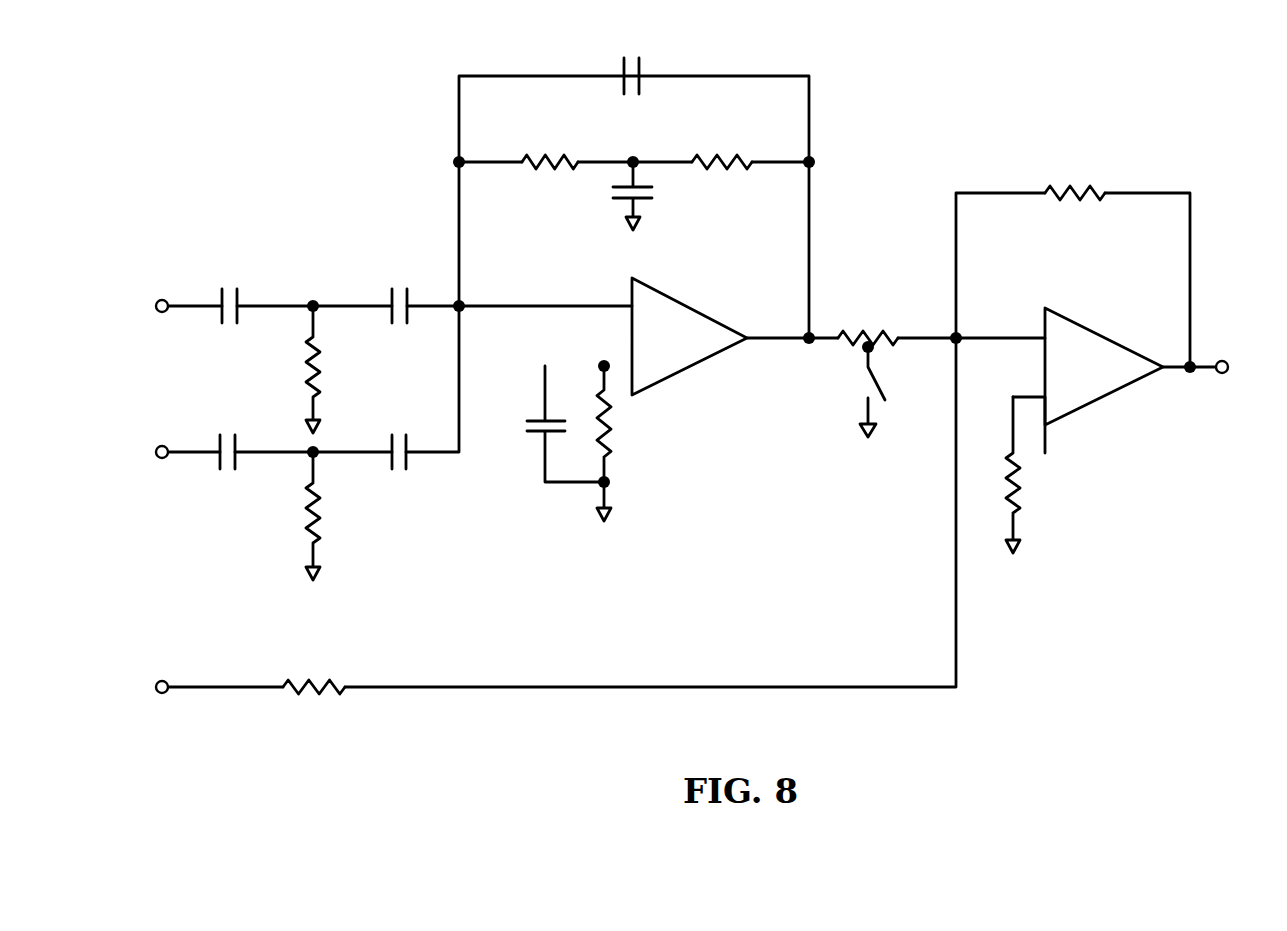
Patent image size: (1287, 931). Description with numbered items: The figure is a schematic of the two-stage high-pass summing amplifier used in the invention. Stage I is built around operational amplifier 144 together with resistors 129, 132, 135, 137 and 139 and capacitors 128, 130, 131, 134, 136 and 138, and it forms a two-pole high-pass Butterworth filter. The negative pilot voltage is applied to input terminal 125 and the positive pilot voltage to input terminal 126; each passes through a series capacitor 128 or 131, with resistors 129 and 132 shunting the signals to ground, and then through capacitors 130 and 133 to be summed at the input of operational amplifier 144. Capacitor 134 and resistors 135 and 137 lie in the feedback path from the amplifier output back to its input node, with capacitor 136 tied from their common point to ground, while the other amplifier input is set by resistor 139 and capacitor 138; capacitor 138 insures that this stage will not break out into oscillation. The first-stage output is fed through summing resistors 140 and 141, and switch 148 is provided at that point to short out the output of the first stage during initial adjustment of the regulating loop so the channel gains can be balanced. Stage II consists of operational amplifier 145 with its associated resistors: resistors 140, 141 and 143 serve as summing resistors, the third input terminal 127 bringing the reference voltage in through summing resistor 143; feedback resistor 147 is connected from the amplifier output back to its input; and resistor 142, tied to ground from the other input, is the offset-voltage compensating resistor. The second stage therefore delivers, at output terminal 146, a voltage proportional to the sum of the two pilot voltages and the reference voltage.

The input terminal 125 is at (164, 299).
The input terminal 126 is at (163, 459).
The third input terminal 127 is at (166, 692).
The capacitor 128 is at (240, 295).
The resistor 129 is at (322, 364).
The capacitor 130 is at (410, 293).
The capacitor 131 is at (237, 462).
The resistor 132 is at (322, 515).
The capacitor 133 is at (408, 462).
The capacitor 134 is at (643, 67).
The resistor 135 is at (552, 158).
The capacitor 136 is at (612, 185).
The resistor 137 is at (721, 154).
The capacitor 138 is at (538, 418).
The resistor 139 is at (614, 422).
The summing resistor 140 is at (838, 328).
The summing resistor 141 is at (888, 333).
The offset-voltage compensating resistor 142 is at (1024, 483).
The summing resistor 143 is at (322, 690).
The operational amplifier 144 is at (690, 343).
The operational amplifier 145 is at (1105, 378).
The output terminal 146 is at (1228, 372).
The feedback resistor 147 is at (1070, 183).
The switch 148 is at (866, 388).